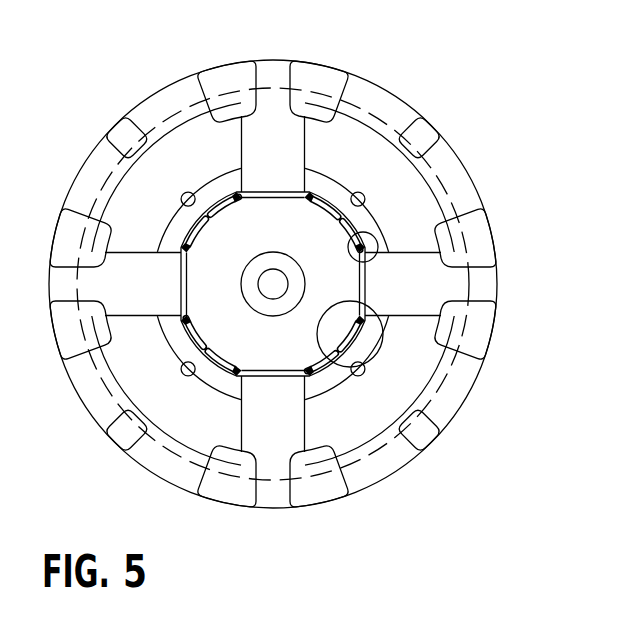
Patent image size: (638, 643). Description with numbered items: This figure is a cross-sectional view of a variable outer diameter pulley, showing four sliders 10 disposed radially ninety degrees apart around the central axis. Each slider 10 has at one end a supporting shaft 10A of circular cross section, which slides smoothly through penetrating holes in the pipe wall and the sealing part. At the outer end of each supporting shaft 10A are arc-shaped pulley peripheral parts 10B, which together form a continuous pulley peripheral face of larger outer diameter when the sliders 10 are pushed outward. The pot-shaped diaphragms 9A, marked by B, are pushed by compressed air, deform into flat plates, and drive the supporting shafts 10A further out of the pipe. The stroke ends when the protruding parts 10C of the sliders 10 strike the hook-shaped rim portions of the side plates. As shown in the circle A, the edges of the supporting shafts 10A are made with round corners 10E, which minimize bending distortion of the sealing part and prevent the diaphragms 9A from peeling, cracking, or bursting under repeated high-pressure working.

The slider 10 is at (283, 60).
The supporting shaft 10A is at (283, 157).
The arc-shaped pulley peripheral part 10B is at (372, 88).
The protruding part 10C is at (478, 232).
The round corner 10E is at (372, 257).
The diaphragm 9A is at (333, 205).
The circle A is at (372, 232).
The mark B is at (398, 424).